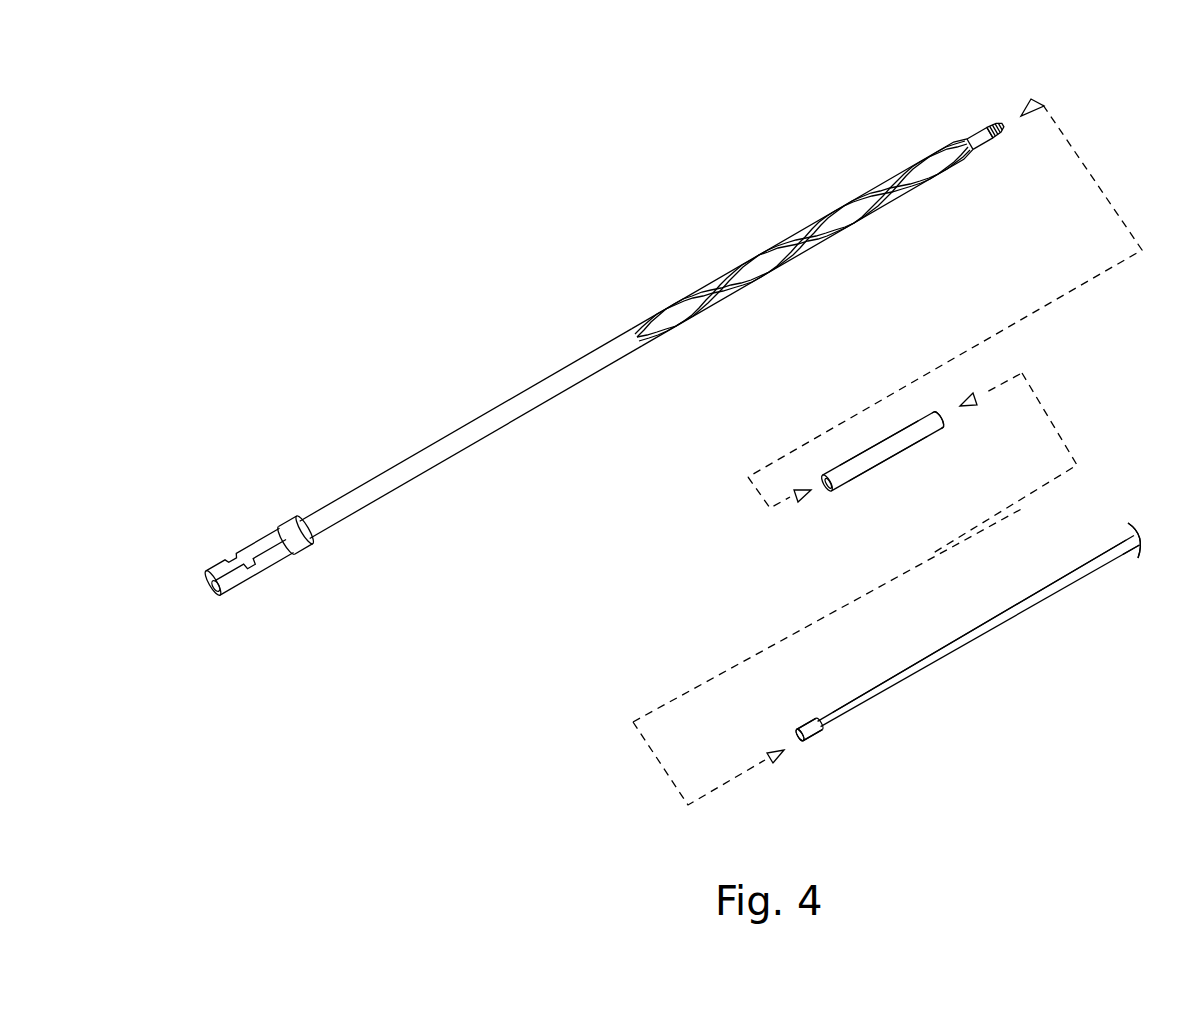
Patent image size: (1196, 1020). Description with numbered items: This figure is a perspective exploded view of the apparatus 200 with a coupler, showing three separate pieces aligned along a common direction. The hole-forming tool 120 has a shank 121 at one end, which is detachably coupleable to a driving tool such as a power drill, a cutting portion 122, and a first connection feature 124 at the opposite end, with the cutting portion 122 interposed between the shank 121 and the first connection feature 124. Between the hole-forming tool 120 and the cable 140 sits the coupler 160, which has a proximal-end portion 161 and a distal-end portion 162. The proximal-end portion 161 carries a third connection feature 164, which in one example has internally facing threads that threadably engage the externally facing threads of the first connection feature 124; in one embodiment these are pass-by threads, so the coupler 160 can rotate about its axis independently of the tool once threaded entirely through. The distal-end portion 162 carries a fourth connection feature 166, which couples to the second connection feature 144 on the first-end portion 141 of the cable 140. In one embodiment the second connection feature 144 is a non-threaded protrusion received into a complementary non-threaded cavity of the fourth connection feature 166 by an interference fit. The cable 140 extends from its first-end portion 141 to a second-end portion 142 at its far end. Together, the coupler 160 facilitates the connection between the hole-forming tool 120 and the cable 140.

The apparatus 200 is at (362, 130).
The hole-forming tool 120 is at (692, 108).
The shank 121 is at (258, 536).
The cutting portion 122 is at (998, 168).
The first connection feature 124 is at (991, 124).
The coupler 160 is at (907, 482).
The proximal-end portion 161 is at (846, 492).
The distal-end portion 162 is at (942, 438).
The third connection feature 164 is at (821, 492).
The fourth connection feature 166 is at (944, 418).
The cable 140 is at (1062, 748).
The first-end portion 141 is at (888, 728).
The second-end portion 142 is at (1100, 598).
The second connection feature 144 is at (821, 728).